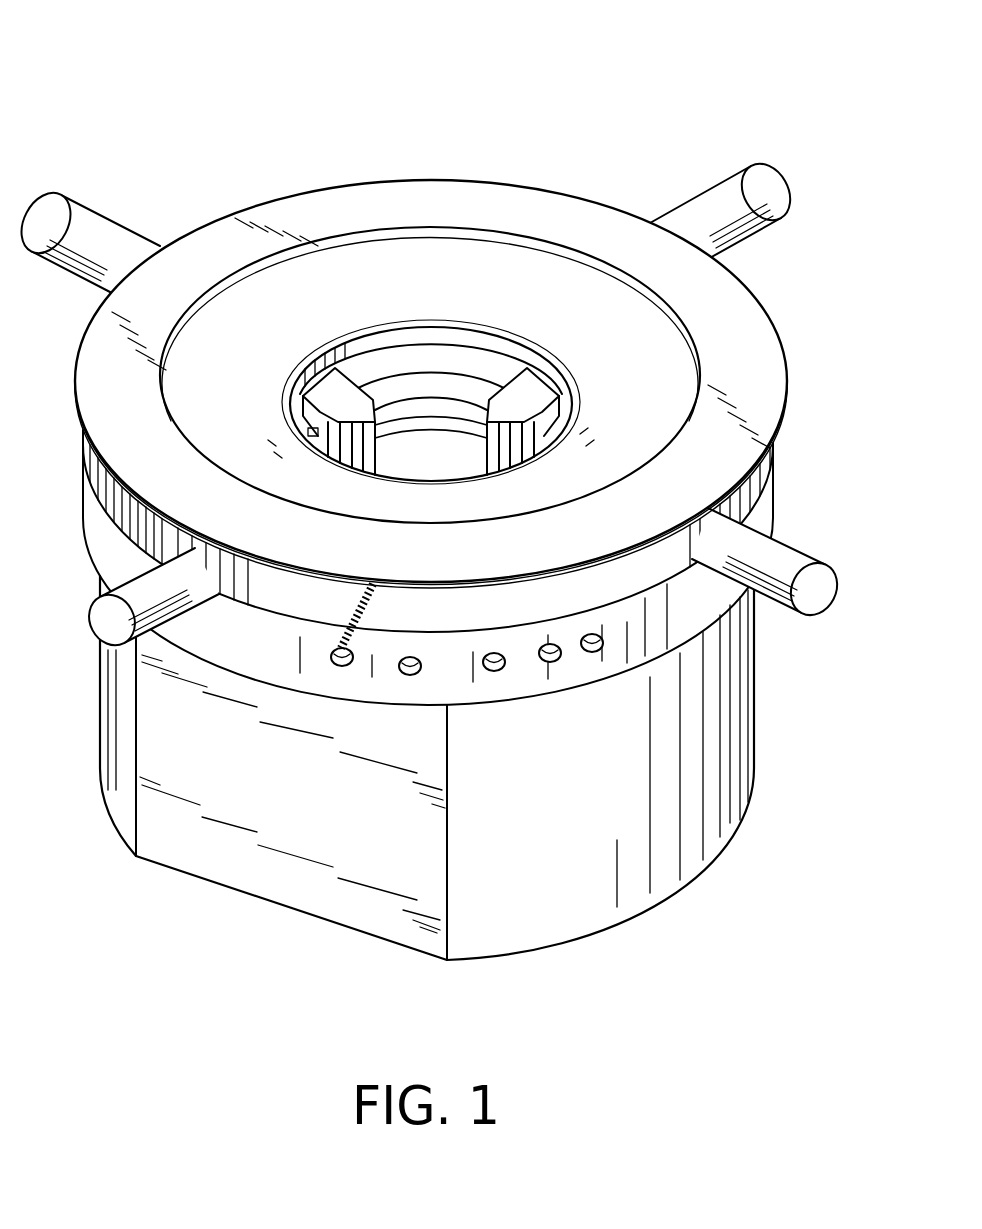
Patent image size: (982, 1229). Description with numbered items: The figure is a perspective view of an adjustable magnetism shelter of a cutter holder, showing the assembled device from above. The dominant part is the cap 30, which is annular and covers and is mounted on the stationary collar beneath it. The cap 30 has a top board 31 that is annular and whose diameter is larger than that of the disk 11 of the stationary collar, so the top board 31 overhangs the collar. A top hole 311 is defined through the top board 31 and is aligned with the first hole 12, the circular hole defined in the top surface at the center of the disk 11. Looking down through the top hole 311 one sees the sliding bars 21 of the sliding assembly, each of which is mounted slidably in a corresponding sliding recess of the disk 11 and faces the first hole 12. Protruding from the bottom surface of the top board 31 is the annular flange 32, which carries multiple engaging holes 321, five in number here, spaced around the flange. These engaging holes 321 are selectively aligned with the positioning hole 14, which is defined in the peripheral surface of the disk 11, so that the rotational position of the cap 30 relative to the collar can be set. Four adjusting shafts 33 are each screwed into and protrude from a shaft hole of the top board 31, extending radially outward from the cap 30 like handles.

The cap 30 is at (387, 84).
The top board 31 is at (314, 215).
The top hole 311 is at (431, 330).
The disk 11 is at (371, 366).
The first hole 12 is at (469, 386).
The sliding bar 21 is at (543, 386).
The positioning hole 14 is at (364, 575).
The annular flange 32 is at (483, 690).
The engaging holes 321 is at (593, 652).
The adjusting shafts 33 is at (738, 216).